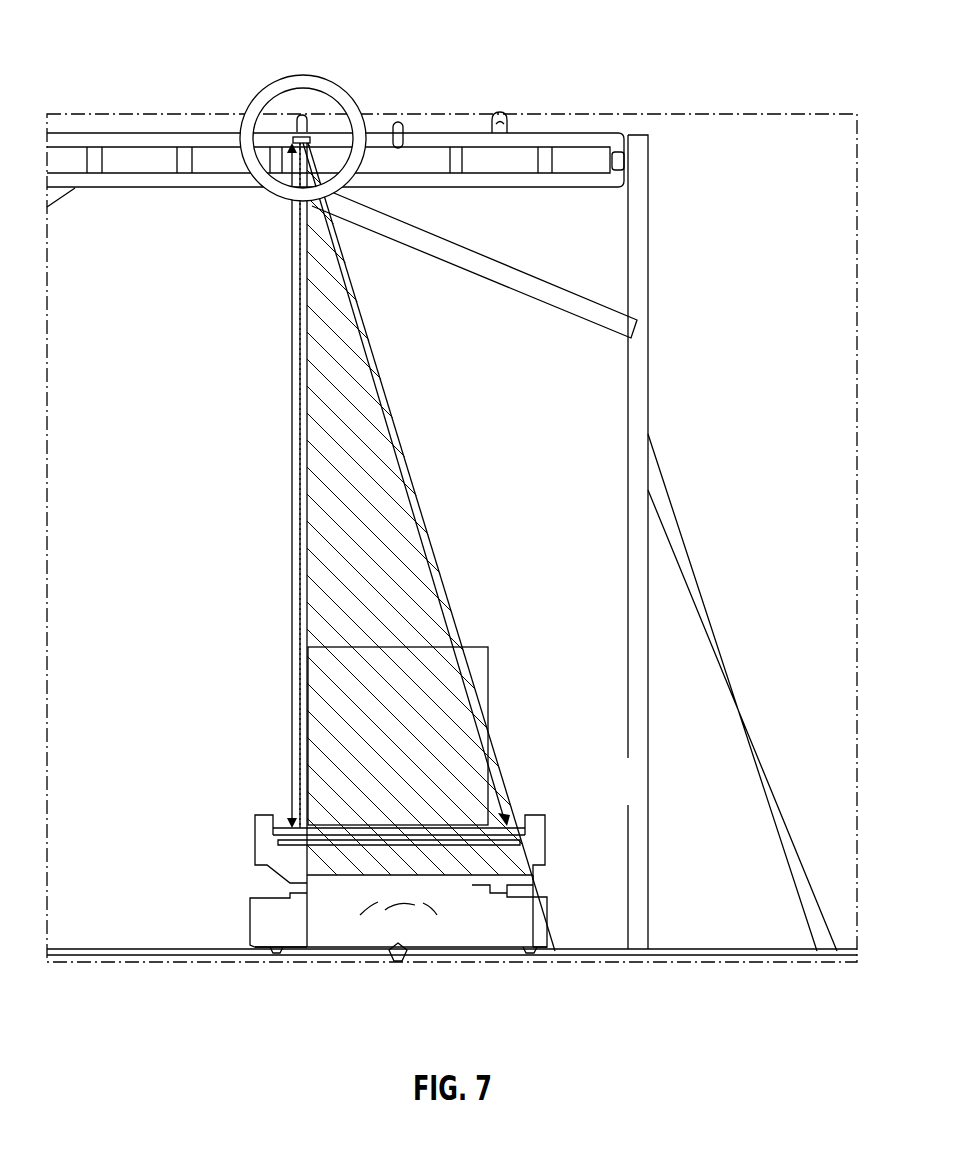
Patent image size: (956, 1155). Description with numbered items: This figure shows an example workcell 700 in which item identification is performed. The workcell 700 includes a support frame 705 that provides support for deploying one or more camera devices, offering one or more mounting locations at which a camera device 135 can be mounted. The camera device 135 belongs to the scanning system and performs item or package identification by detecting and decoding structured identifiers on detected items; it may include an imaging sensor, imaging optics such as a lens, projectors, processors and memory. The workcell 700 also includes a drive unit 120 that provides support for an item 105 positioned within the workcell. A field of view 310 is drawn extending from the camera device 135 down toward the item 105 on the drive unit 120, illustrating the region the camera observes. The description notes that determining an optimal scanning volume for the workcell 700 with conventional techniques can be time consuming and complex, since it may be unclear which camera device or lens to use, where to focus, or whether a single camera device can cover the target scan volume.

The workcell 700 is at (115, 33).
The camera device 135 is at (287, 138).
The support frame 705 is at (633, 135).
The field of view 310 is at (398, 512).
The item 105 is at (487, 648).
The drive unit 120 is at (480, 945).